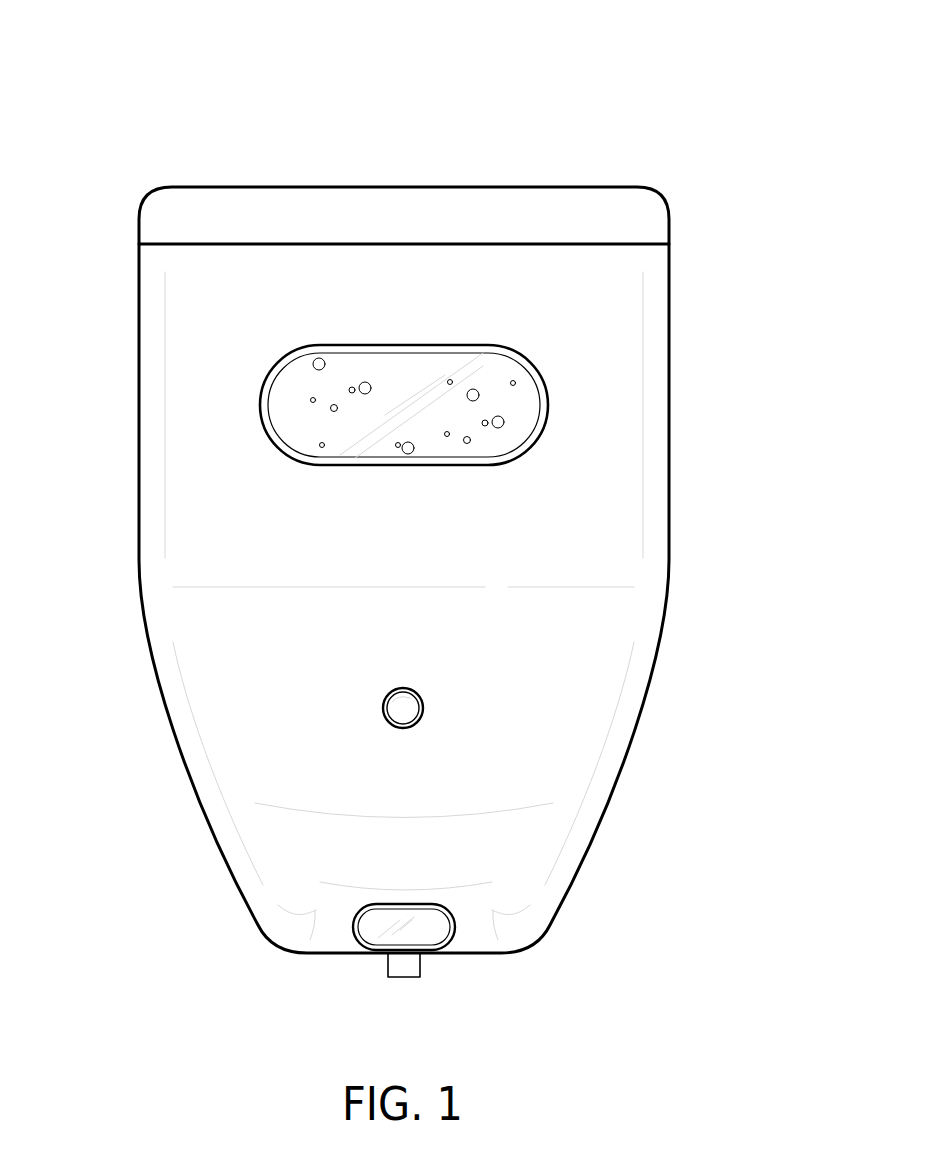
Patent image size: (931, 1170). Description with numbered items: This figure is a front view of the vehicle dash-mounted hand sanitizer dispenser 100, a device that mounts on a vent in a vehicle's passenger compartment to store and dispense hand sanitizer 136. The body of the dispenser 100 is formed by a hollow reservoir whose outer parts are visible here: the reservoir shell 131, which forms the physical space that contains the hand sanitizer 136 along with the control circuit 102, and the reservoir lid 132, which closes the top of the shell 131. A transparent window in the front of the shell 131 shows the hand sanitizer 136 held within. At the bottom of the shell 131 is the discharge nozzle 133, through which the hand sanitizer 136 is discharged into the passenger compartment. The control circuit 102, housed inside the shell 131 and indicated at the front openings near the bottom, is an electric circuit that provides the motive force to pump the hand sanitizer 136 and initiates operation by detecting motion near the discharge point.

The vehicle dash-mounted hand sanitizer dispenser 100 is at (181, 113).
The reservoir shell 131 is at (622, 398).
The reservoir lid 132 is at (635, 215).
The discharge nozzle 133 is at (403, 977).
The hand sanitizer 136 is at (457, 415).
The control circuit 102 is at (426, 920).